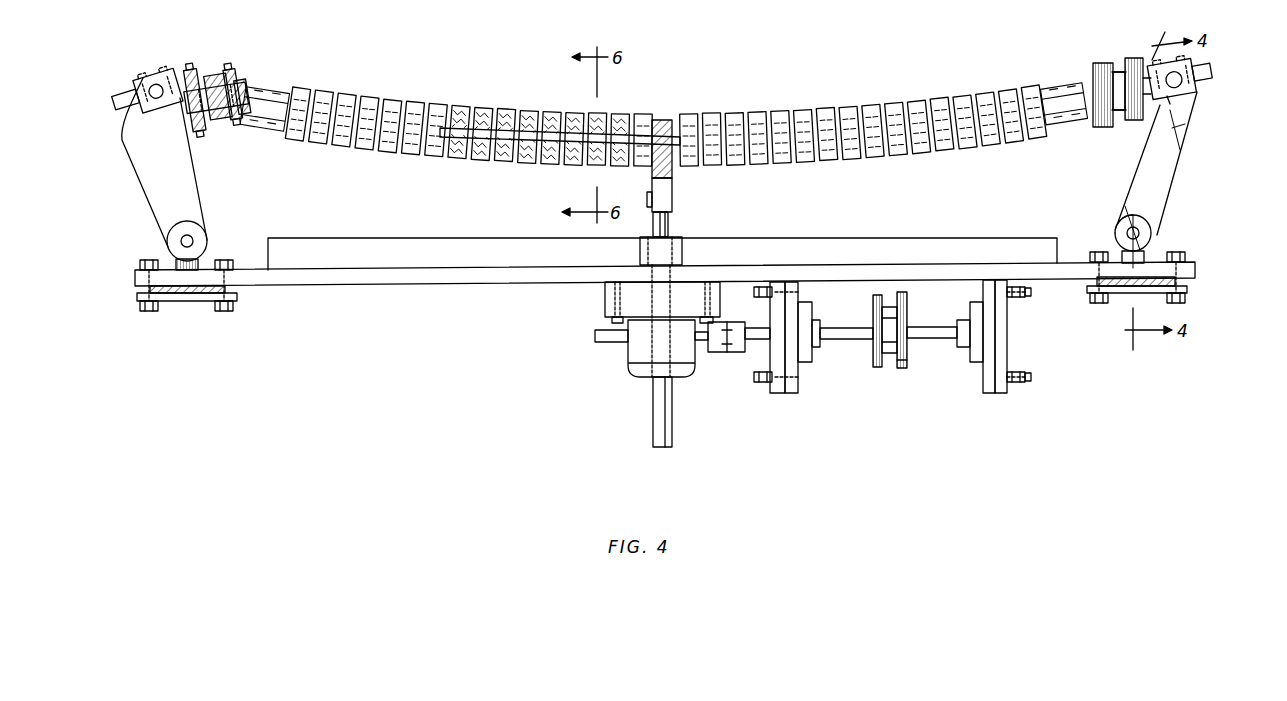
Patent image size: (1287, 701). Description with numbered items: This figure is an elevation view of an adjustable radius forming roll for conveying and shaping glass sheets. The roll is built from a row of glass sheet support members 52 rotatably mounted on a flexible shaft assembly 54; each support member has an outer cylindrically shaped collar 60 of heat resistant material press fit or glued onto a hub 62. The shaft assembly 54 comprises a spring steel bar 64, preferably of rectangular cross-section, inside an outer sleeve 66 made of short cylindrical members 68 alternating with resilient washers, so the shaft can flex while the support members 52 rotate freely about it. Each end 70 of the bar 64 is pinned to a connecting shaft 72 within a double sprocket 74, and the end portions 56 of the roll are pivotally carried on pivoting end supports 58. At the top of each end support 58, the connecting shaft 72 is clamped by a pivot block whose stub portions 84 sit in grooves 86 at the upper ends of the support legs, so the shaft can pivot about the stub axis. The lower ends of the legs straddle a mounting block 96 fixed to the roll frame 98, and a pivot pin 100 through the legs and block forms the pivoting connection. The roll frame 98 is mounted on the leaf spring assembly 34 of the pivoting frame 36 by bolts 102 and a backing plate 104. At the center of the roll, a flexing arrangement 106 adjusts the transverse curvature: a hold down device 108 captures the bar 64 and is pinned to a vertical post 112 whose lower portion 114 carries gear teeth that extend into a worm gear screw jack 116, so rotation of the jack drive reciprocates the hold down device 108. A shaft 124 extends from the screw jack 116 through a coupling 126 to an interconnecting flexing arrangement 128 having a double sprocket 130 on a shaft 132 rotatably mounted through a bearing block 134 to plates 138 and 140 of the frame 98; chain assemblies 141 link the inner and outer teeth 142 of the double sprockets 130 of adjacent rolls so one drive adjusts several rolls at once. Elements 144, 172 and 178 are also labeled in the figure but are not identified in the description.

The leaf spring assembly 34 is at (183, 293).
The pivoting frame 36 is at (990, 393).
The glass sheet support members 52 is at (752, 112).
The flexible shaft assembly 54 is at (533, 128).
The end portions 56 is at (112, 85).
The pivoting end supports 58 is at (133, 186).
The outer collar 60 is at (456, 100).
The hub 62 is at (480, 104).
The bar 64 is at (463, 150).
The outer sleeve 66 is at (530, 160).
The cylindrical members 68 is at (603, 160).
The end of bar 70 is at (238, 88).
The connecting shaft 72 is at (215, 72).
The double sprocket 74 is at (195, 62).
The stub portions 84 is at (1160, 102).
The grooves 86 is at (1190, 92).
The mounting block 96 is at (1160, 248).
The roll frame 98 is at (1195, 266).
The pivot pin 100 is at (190, 240).
The bolts 102 is at (150, 311).
The backing plate 104 is at (237, 297).
The flexing arrangement 106 is at (585, 302).
The hold down device 108 is at (674, 196).
The vertical post 112 is at (670, 228).
The lower portion 114 is at (653, 410).
The screw jack 116 is at (628, 368).
The shaft 124 is at (708, 342).
The coupling 126 is at (735, 322).
The interconnecting flexing arrangement 128 is at (889, 411).
The double sprocket 130 is at (888, 307).
The shaft 132 is at (935, 327).
The bearing block 134 is at (790, 393).
The plate 138 is at (775, 365).
The plate 140 is at (1022, 312).
The chain assemblies 141 is at (903, 292).
The outer teeth 142 is at (910, 360).
The sprocket 144 is at (875, 367).
The sprocket 172 is at (196, 126).
The collar 178 is at (232, 130).